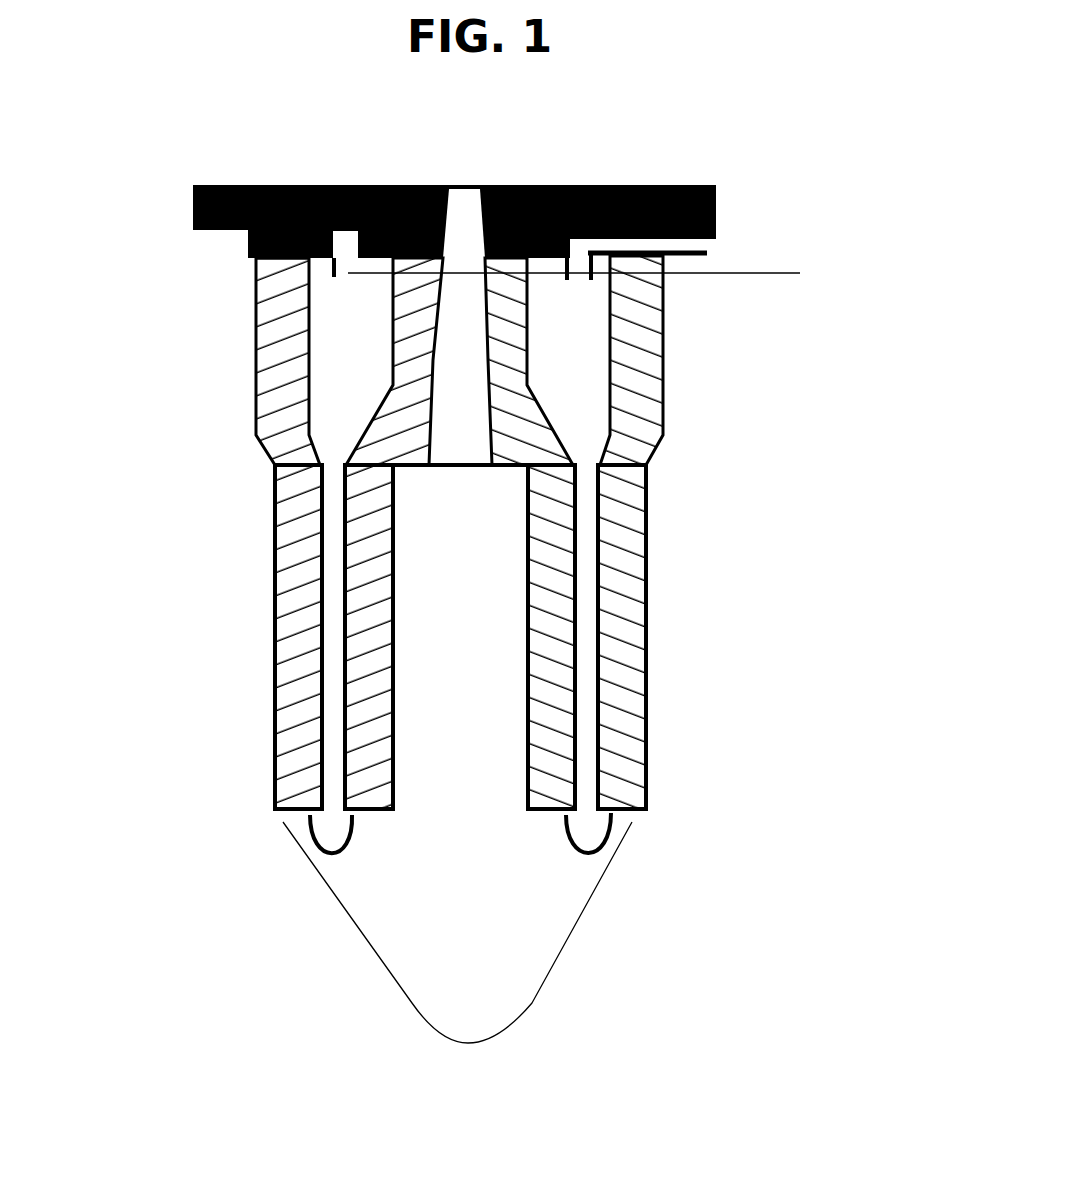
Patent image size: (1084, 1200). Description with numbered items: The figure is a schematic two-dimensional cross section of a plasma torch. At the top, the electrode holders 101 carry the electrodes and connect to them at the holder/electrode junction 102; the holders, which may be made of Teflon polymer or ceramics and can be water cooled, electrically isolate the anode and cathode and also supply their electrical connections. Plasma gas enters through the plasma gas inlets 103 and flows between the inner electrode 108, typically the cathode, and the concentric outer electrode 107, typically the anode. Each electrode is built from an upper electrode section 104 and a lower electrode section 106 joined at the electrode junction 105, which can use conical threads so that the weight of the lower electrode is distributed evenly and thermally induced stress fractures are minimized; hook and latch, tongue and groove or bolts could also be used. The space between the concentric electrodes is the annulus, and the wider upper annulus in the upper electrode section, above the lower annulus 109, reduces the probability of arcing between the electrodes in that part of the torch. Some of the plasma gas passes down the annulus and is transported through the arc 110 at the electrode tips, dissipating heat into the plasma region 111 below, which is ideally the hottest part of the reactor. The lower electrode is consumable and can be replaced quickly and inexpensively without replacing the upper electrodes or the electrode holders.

The electrode holder 101 is at (716, 212).
The holder/electrode junction 102 is at (252, 263).
The plasma gas inlet 103 is at (703, 247).
The upper electrode section 104 is at (683, 287).
The electrode junction 105 is at (658, 468).
The lower electrode section 106 is at (263, 793).
The outer electrode 107 is at (648, 603).
The inner electrode 108 is at (562, 656).
The lower annulus 109 is at (585, 720).
The arc 110 is at (628, 830).
The plasma region 111 is at (594, 930).